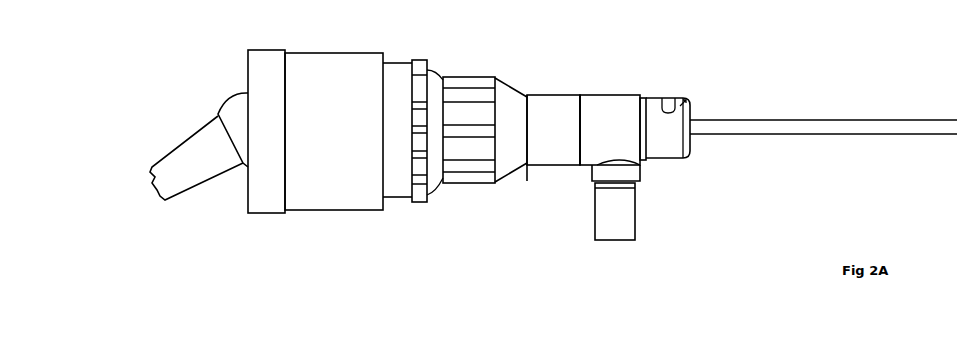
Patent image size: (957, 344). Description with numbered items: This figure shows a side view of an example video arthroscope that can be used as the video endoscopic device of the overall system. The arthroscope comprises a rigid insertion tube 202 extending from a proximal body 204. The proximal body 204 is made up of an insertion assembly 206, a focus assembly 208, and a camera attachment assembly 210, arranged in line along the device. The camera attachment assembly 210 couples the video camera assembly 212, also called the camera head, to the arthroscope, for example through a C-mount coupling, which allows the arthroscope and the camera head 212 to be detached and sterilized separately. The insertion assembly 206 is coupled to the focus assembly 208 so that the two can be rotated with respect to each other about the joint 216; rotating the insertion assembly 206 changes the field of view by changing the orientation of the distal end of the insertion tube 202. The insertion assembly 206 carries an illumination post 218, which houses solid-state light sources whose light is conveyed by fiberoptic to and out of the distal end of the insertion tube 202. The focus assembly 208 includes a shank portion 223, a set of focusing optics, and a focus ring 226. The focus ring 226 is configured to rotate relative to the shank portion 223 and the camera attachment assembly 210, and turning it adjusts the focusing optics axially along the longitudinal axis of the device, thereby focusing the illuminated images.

The rigid insertion tube 202 is at (815, 123).
The proximal body 204 is at (592, 121).
The insertion assembly 206 is at (614, 103).
The focus assembly 208 is at (538, 145).
The camera attachment assembly 210 is at (422, 195).
The video camera assembly 212 is at (356, 73).
The joint 216 is at (578, 97).
The illumination post 218 is at (627, 212).
The shank portion 223 is at (543, 162).
The focus ring 226 is at (473, 168).